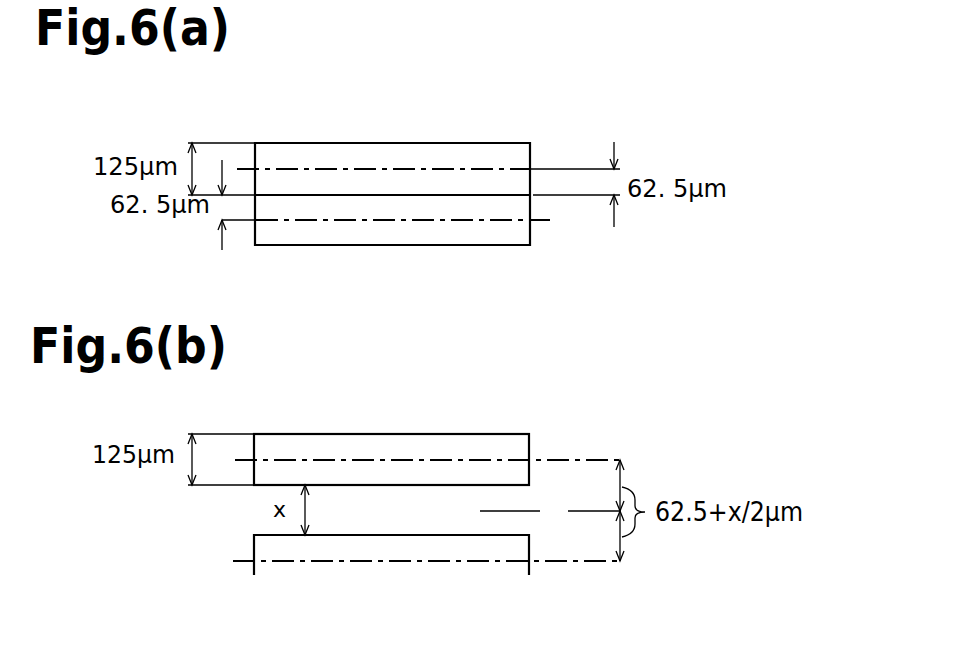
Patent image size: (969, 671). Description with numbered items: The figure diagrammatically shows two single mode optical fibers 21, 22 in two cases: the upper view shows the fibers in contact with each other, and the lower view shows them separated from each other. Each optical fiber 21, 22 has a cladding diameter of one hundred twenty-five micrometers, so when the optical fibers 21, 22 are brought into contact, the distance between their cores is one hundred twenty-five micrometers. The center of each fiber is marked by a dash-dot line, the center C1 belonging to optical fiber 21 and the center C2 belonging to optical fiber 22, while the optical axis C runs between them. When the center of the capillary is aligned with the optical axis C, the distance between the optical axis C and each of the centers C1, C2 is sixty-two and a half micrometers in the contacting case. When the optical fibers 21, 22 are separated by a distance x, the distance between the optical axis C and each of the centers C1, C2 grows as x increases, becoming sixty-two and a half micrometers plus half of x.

In FIG. 6A, the optical fiber 21 is at (338, 150).
In FIG. 6B, the optical fiber 21 is at (522, 440).
In FIG. 6A, the optical fiber 22 is at (318, 235).
In FIG. 6B, the optical fiber 22 is at (262, 540).
In FIG. 6A, the center of optical fiber C1 is at (415, 169).
In FIG. 6B, the center of optical fiber C1 is at (462, 460).
In FIG. 6A, the center of optical fiber C2 is at (382, 222).
In FIG. 6B, the center of optical fiber C2 is at (408, 561).
In FIG. 6A, the optical axis C is at (563, 197).
In FIG. 6B, the optical axis C is at (557, 512).